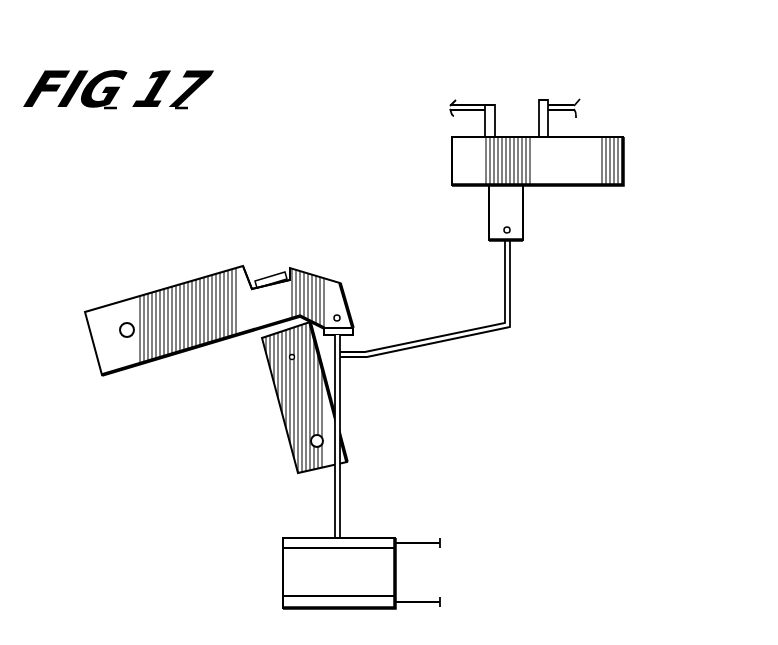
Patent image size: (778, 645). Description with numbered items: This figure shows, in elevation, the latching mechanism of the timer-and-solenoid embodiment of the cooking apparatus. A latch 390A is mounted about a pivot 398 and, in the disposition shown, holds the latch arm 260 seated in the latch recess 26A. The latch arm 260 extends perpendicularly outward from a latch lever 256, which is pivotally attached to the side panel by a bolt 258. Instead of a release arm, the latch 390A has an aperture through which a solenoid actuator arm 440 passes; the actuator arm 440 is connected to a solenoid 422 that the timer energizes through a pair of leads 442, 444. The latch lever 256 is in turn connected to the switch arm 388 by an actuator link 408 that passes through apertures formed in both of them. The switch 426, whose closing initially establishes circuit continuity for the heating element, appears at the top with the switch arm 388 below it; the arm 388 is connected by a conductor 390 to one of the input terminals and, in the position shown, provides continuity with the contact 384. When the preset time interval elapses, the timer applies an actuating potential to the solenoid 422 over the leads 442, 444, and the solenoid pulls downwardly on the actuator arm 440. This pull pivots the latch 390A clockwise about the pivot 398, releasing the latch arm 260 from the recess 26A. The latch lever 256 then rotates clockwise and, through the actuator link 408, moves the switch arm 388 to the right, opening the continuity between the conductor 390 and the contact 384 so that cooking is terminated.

The pivot 398 is at (127, 322).
The arm 390A is at (345, 292).
The notch 26A is at (254, 284).
The latch arm 260 is at (278, 273).
The latch lever 256 is at (270, 382).
The bolt 258 is at (311, 441).
The solenoid actuator arm 440 is at (341, 383).
The actuator link 408 is at (478, 337).
The switch 426 is at (622, 184).
The switch arm 388 is at (488, 209).
The second contact 384 is at (495, 104).
The conductor 390 is at (575, 103).
The solenoid 422 is at (290, 555).
The lead 442 is at (422, 540).
The lead 444 is at (422, 600).